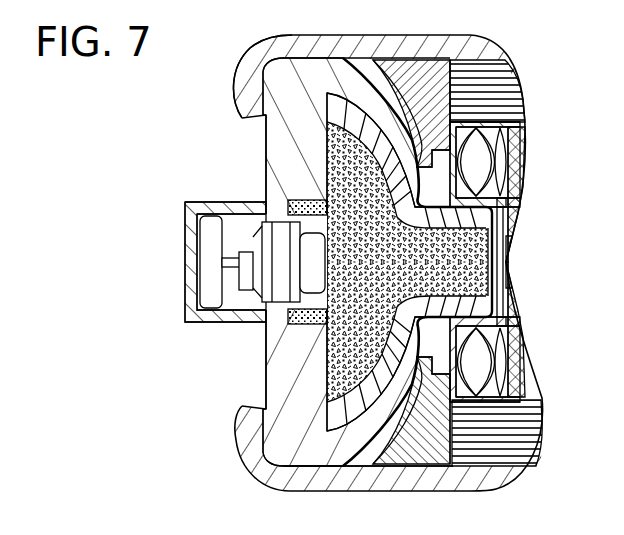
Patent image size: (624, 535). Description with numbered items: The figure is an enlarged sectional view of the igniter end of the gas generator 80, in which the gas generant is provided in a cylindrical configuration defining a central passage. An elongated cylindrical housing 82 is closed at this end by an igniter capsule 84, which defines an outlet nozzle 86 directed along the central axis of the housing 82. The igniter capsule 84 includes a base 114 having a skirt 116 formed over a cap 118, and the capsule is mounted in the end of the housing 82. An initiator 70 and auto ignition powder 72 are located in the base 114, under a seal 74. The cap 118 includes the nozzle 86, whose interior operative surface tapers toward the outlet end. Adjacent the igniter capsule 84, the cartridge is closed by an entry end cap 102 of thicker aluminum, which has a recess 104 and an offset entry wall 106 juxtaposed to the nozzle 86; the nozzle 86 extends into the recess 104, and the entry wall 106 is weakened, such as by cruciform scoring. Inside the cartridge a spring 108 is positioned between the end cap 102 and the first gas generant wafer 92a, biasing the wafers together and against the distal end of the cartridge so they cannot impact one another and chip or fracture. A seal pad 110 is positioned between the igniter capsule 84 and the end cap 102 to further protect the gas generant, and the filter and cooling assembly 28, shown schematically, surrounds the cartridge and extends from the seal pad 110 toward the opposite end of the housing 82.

The filter and cooling assembly 28 is at (522, 432).
The initiator 70 is at (285, 285).
The auto ignition powder 72 is at (300, 199).
The seal 74 is at (417, 275).
The gas generator 80 is at (245, 42).
The housing 82 is at (426, 36).
The igniter capsule 84 is at (262, 158).
The outlet nozzle 86 is at (478, 306).
The first gas generant wafer 92a is at (518, 373).
The entry end cap 102 is at (466, 355).
The recess 104 is at (509, 220).
The entry wall 106 is at (504, 236).
The spring 108 is at (496, 330).
The seal pad 110 is at (412, 450).
The base 114 is at (298, 133).
The skirt 116 is at (345, 58).
The cap 118 is at (505, 90).